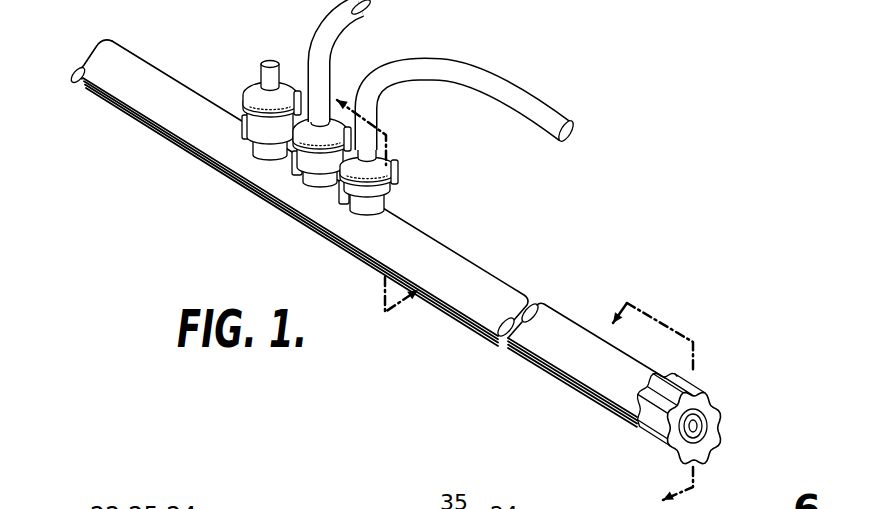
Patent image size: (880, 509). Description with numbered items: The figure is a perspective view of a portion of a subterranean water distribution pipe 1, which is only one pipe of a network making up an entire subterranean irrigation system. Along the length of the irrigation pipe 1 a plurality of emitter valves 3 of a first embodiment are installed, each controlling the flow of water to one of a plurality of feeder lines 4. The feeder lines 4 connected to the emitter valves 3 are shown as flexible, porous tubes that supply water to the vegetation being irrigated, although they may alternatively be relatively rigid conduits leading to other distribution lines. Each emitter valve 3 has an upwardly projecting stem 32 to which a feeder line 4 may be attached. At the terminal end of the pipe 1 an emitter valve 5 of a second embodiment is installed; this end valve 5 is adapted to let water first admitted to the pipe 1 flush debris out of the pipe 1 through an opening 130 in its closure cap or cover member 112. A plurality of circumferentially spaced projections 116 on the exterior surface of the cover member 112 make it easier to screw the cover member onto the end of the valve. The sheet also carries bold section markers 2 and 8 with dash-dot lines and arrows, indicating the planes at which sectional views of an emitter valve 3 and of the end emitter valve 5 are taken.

The subterranean water distribution pipe 1 is at (168, 150).
The emitter valve 3 is at (248, 86).
The valve stem nipple 32 is at (274, 80).
The feeder line 4 is at (356, 34).
The emitter valve 5 is at (696, 434).
The cover member 112 is at (697, 449).
The projections 116 is at (657, 434).
The opening 130 is at (694, 424).
The section line for FIG. 2 is at (381, 199).
The section line for FIG. 8 is at (632, 392).